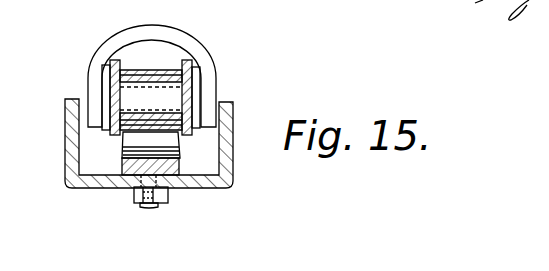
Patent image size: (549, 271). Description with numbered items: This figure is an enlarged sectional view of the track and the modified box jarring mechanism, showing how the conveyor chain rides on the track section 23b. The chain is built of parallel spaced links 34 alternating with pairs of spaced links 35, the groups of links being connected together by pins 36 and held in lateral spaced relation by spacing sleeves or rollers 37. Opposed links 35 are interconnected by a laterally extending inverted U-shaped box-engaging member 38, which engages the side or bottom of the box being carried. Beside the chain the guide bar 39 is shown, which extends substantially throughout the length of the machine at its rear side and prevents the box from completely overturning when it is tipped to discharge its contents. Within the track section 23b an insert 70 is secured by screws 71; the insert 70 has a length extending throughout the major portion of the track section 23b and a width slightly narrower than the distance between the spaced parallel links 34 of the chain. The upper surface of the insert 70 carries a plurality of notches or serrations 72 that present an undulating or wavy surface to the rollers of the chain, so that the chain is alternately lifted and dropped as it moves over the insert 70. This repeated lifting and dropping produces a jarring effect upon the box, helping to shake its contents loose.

The track section 23b is at (93, 189).
The inverted U-shaped box-engaging member 38 is at (165, 30).
The parallel spaced links 34 is at (117, 59).
The guide bar 39 is at (197, 64).
The spaced links 35 is at (94, 60).
The spacing sleeve or roller 37 is at (163, 69).
The pin 36 is at (203, 90).
The notches or serrations 72 is at (179, 153).
The insert 70 is at (122, 157).
The screw 71 is at (148, 205).